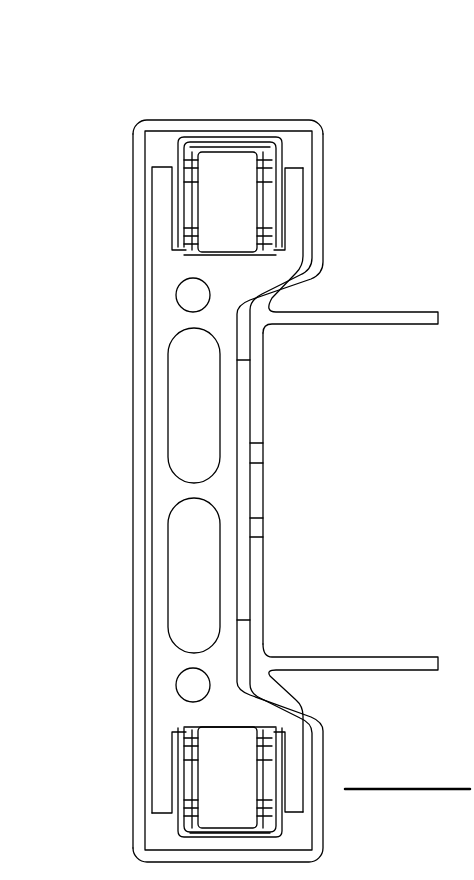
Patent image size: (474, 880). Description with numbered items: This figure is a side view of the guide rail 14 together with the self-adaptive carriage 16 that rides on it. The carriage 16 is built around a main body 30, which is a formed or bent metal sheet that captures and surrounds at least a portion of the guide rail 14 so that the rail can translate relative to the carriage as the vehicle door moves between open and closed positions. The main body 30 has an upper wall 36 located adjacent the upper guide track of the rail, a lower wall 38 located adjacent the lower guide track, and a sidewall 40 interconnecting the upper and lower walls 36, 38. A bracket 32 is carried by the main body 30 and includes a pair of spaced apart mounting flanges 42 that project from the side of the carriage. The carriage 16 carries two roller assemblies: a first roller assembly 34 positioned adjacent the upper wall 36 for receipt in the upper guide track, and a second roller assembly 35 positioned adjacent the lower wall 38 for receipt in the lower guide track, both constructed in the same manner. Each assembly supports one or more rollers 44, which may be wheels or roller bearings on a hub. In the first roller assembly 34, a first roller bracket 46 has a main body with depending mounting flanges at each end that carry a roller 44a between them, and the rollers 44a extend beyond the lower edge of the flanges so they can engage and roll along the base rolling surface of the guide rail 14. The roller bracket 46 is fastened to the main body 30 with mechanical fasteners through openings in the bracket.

The guide rail 14 is at (171, 273).
The self-adaptive carriage 16 is at (123, 160).
The main body 30 is at (330, 197).
The bracket 32 is at (258, 392).
The first roller assembly 34 is at (275, 140).
The second roller assembly 35 is at (280, 833).
The upper wall 36 is at (160, 122).
The lower wall 38 is at (228, 856).
The sidewall 40 is at (143, 393).
The mounting flanges 42 is at (387, 318).
The roller 44 is at (237, 185).
The roller 44a is at (222, 175).
The first roller bracket 46 is at (258, 140).